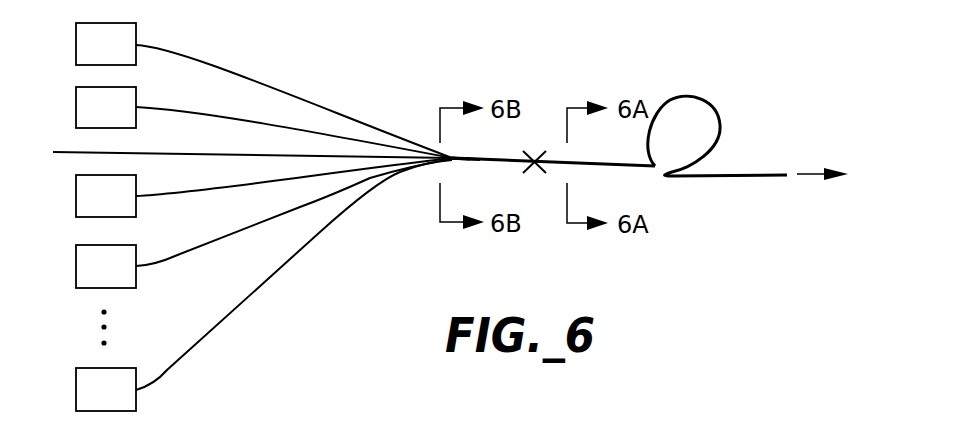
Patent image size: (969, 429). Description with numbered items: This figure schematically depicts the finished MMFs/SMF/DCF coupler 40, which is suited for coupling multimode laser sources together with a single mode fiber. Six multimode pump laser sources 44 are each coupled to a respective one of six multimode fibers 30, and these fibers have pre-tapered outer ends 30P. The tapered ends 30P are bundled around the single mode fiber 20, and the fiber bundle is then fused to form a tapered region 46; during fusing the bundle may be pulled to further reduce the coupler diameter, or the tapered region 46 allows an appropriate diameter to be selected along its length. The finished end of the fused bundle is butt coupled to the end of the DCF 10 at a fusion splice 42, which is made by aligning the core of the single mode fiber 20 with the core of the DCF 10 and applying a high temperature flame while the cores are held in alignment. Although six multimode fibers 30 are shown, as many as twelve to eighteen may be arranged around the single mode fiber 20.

The DCF 10 is at (695, 97).
The single mode fiber 20 is at (160, 152).
The multimode fibers 30 is at (205, 62).
The pre-tapered outer ends 30P is at (447, 162).
The MMFs/SMF/DCF coupler 40 is at (478, 68).
The fusion splice 42 is at (540, 157).
The multimode pump laser sources 44 is at (90, 66).
The tapered region 46 is at (447, 156).